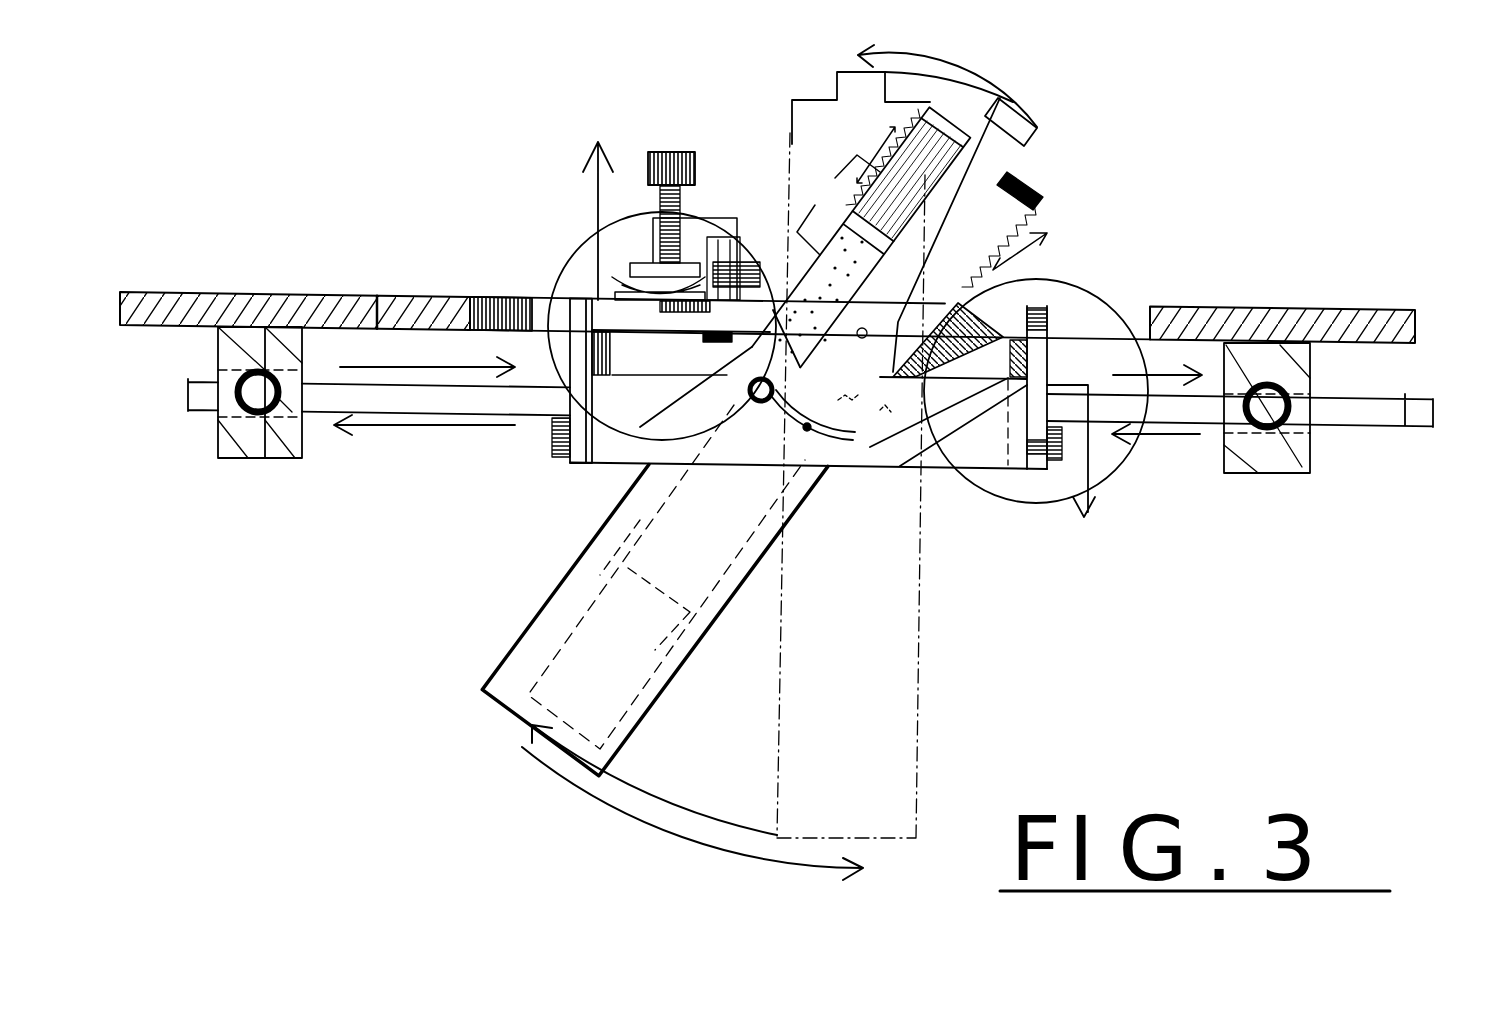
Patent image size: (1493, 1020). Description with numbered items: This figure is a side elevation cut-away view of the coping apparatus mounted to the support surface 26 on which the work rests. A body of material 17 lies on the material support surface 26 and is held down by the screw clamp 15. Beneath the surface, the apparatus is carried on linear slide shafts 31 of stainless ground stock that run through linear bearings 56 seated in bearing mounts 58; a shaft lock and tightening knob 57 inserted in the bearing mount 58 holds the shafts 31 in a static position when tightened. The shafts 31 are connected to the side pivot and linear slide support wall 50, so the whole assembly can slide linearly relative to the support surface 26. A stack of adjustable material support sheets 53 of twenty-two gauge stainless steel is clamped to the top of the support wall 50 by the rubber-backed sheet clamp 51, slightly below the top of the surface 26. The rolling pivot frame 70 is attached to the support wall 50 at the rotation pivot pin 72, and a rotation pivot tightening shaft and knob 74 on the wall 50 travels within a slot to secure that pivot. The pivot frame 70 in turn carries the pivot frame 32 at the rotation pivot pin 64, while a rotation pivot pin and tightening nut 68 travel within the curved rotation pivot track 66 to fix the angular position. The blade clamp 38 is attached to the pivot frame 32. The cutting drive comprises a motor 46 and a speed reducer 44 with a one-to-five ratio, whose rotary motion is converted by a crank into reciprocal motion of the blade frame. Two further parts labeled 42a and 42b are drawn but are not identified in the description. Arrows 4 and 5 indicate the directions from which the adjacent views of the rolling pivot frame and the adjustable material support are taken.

The section line arrow (FIG. 4 view) 4 is at (598, 187).
The section line arrow (FIG. 5 view) 5 is at (1071, 488).
The screw clamp 15 is at (657, 197).
The body of material 17 is at (618, 286).
The support surface 26 is at (1263, 323).
The linear slide shafts 31 is at (1172, 403).
The pivot frame 32 is at (1005, 138).
The blade clamp 38 is at (1037, 187).
The outer sleeve of pivot arm 42a is at (835, 178).
The inner sleeve of pivot arm 42b is at (815, 205).
The speed reducer 44 is at (680, 550).
The motor 46 is at (585, 687).
The side pivot and linear slide support wall 50 is at (582, 453).
The adjustable material support sheet clamp 51 is at (588, 300).
The adjustable material support sheets 53 is at (500, 303).
The linear bearings 56 is at (1287, 367).
The shaft lock and tightening knob 57 is at (1282, 430).
The linear bearing mount 58 is at (1302, 455).
The rotation pivot pin 64 is at (858, 318).
The rotation pivot track 66 is at (807, 430).
The rotation pivot pin and tightening nut 68 is at (750, 390).
The rolling pivot frame 70 is at (648, 448).
The rotation pivot pin 72 is at (580, 355).
The rotation pivot tightening shaft and knob 74 is at (580, 457).